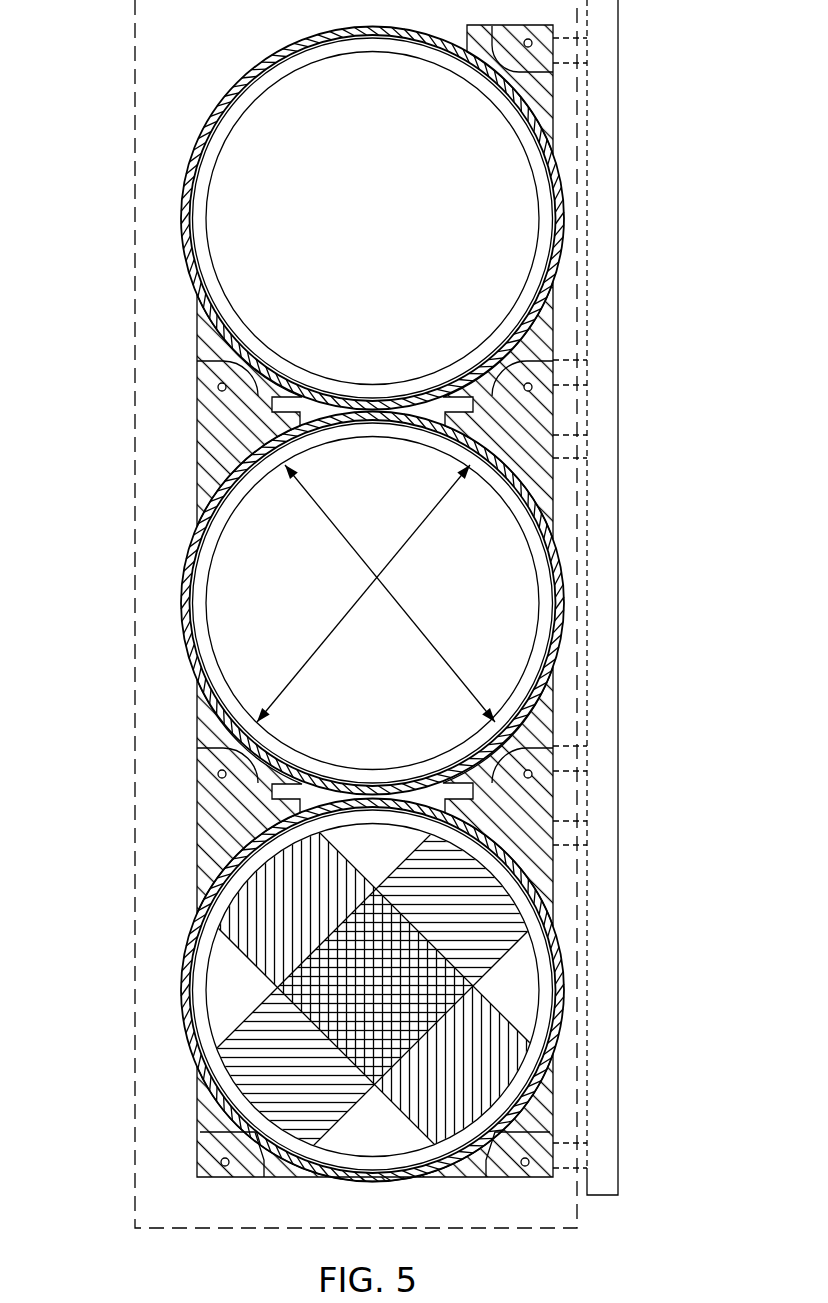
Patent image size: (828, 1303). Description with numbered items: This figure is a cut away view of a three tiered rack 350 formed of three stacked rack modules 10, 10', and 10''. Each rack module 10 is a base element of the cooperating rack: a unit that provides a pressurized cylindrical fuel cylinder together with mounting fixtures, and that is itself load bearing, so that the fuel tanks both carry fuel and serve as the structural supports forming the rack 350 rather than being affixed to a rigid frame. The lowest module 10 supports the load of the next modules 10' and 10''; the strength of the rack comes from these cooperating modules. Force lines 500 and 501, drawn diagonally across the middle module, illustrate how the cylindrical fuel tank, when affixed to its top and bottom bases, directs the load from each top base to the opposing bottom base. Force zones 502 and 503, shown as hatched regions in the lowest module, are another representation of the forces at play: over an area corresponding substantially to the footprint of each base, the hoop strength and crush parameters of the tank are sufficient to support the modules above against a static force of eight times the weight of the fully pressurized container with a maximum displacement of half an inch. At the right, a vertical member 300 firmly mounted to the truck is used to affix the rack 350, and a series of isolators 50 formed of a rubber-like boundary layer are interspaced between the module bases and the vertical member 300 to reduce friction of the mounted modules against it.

The three tiered rack 350 is at (134, 40).
The vertical member 300 is at (619, 8).
The isolator 50 is at (566, 63).
The rack module 10'' is at (328, 273).
The rack module 10' is at (328, 659).
The rack module 10 is at (328, 990).
The force line 500 is at (417, 526).
The force line 501 is at (417, 626).
The force zone 502 is at (311, 917).
The force zone 503 is at (491, 917).